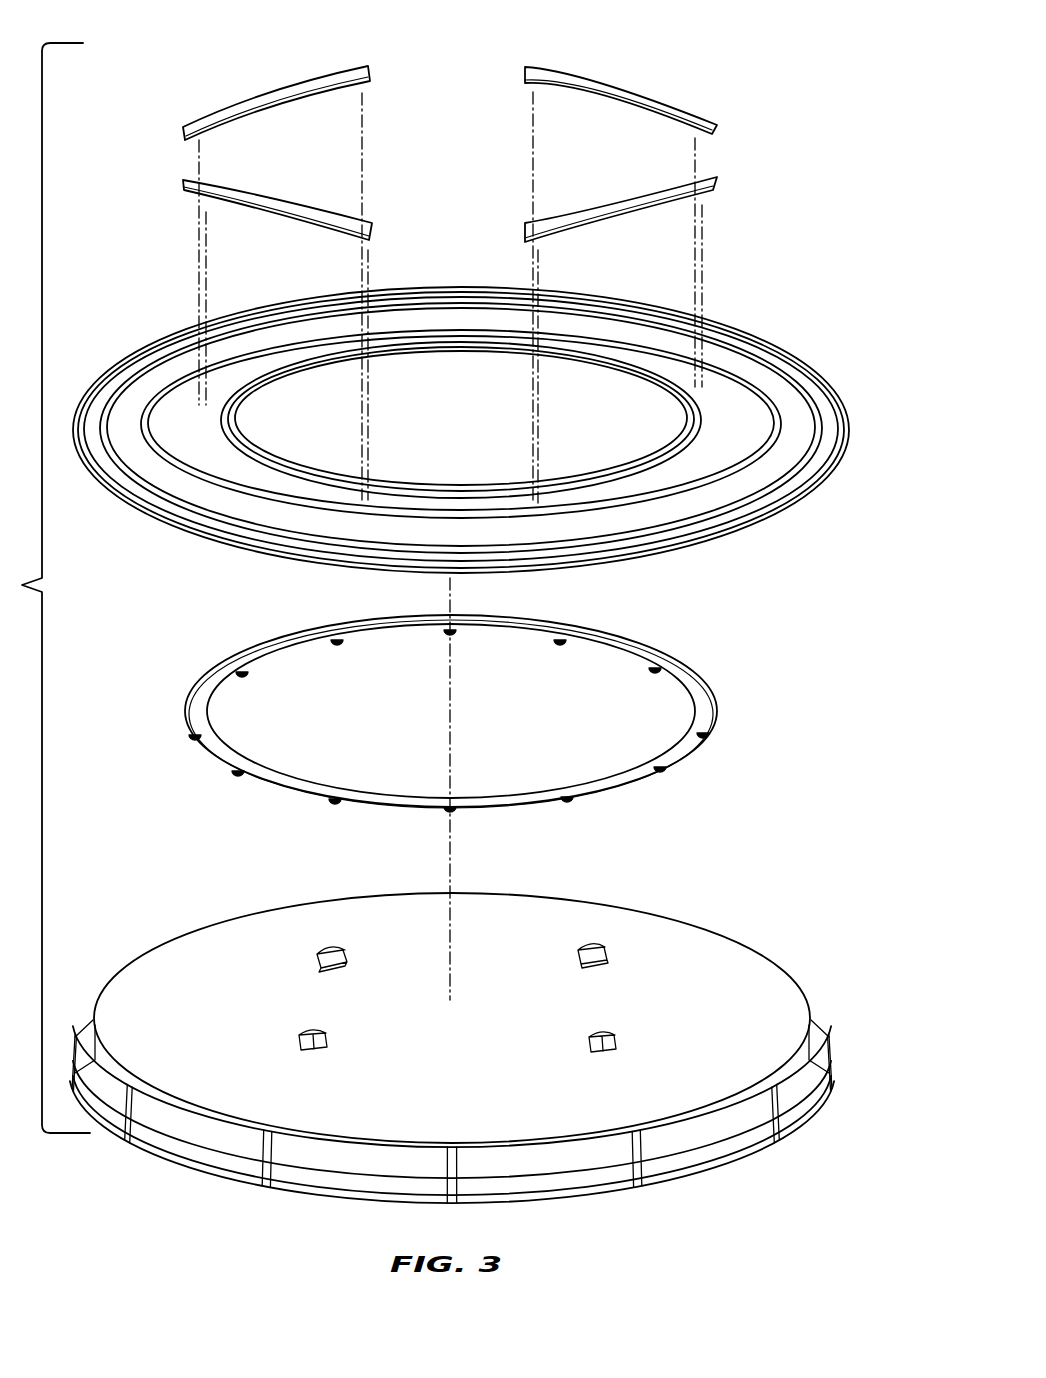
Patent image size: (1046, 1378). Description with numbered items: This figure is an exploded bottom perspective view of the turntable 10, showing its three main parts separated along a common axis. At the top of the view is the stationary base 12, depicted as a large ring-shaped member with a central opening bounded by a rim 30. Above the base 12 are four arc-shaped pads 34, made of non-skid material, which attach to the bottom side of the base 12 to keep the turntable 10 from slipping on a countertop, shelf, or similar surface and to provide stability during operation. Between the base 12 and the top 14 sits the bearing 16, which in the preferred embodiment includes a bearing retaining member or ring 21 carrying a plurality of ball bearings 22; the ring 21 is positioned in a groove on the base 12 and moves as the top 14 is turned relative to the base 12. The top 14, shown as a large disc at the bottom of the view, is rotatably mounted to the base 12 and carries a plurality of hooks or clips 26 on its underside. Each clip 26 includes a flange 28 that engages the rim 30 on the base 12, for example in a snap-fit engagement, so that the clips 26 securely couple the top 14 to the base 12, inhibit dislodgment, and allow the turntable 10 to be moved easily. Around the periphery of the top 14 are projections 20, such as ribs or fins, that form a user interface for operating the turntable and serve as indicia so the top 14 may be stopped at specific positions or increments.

The turntable 10 is at (714, 58).
The stationary base 12 is at (461, 430).
The top 14 is at (452, 1048).
The bearing 16 is at (481, 713).
The projections 20 is at (766, 1148).
The bearing retaining member or ring 21 is at (497, 790).
The ball bearings 22 is at (337, 648).
The hooks or clips 26 is at (460, 986).
The flange 28 is at (300, 1045).
The rim 30 is at (249, 444).
The pads 34 is at (292, 101).